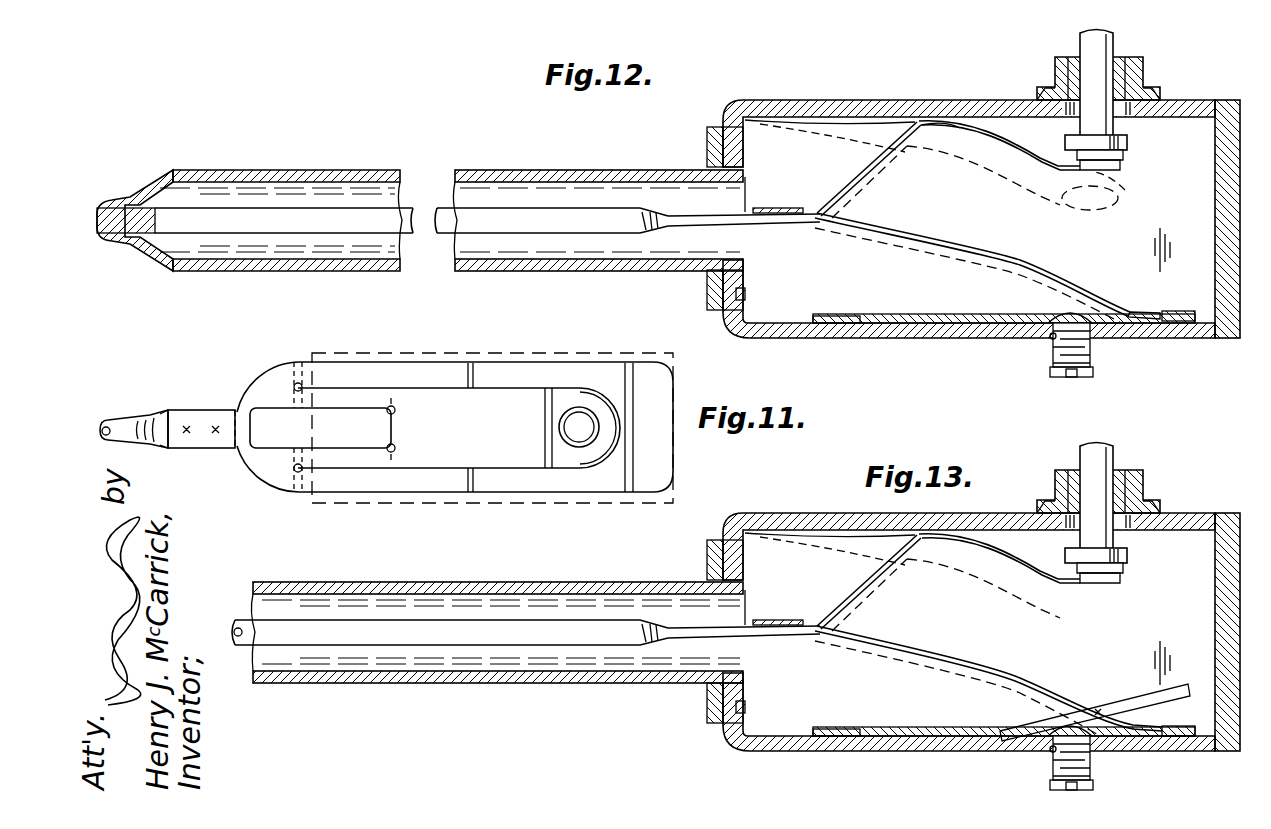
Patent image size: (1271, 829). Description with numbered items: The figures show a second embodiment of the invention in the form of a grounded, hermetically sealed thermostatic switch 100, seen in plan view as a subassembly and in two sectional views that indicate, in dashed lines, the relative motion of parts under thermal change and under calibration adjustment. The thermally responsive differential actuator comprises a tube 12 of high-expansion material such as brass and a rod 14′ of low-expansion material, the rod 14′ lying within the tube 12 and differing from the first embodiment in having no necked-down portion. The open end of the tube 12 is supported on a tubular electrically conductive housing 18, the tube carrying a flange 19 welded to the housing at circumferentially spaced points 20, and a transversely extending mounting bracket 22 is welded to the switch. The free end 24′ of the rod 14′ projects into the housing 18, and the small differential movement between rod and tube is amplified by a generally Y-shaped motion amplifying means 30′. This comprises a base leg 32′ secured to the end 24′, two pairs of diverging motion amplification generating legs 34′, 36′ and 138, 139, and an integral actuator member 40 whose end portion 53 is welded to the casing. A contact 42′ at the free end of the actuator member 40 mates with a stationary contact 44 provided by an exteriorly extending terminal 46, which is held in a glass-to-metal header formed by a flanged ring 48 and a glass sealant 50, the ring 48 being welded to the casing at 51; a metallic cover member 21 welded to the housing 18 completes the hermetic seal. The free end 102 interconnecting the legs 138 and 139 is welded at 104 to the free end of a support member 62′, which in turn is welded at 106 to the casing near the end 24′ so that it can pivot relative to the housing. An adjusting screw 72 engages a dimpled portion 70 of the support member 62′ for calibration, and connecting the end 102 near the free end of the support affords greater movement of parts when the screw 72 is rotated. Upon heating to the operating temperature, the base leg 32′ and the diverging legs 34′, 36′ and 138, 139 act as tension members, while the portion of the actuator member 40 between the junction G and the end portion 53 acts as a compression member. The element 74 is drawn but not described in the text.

In FIG. 12, the tube 12 is at (472, 168).
In FIG. 13, the tube 12 is at (602, 581).
In FIG. 12, the rod 14′ is at (437, 210).
In FIG. 13, the rod 14′ is at (606, 643).
In FIG. 11, the rod 14′ is at (124, 418).
In FIG. 12, the end of rod 24′ is at (703, 226).
In FIG. 13, the end of rod 24′ is at (706, 639).
In FIG. 11, the end of rod 24′ is at (163, 412).
In FIG. 12, the base leg 32′ is at (777, 214).
In FIG. 13, the base leg 32′ is at (787, 626).
In FIG. 11, the base leg 32′ is at (232, 396).
In FIG. 12, the motion amplification generating leg 34′ is at (880, 180).
In FIG. 13, the motion amplification generating leg 34′ is at (880, 592).
In FIG. 11, the motion amplification generating leg 34′ is at (352, 460).
In FIG. 12, the motion amplifying means 30′ is at (864, 167).
In FIG. 13, the motion amplifying means 30′ is at (864, 580).
In FIG. 11, the motion amplification generating leg 36′ is at (342, 396).
In FIG. 12, the support member 62′ is at (962, 313).
In FIG. 13, the support member 62′ is at (962, 726).
In FIG. 11, the support member 62′ is at (366, 382).
In FIG. 11, the motion amplification generating leg 139 is at (518, 378).
In FIG. 12, the contact 42′ is at (1124, 158).
In FIG. 13, the contact 42′ is at (1124, 571).
In FIG. 11, the contact 42′ is at (578, 415).
In FIG. 12, the end portion of actuator member 53 is at (792, 117).
In FIG. 13, the end portion of actuator member 53 is at (797, 530).
In FIG. 11, the end portion of actuator member 53 is at (272, 445).
In FIG. 12, the actuator member 40 is at (1040, 150).
In FIG. 13, the actuator member 40 is at (1010, 562).
In FIG. 11, the actuator member 40 is at (446, 492).
In FIG. 12, the motion amplification generating leg 138 is at (932, 232).
In FIG. 13, the motion amplification generating leg 138 is at (1020, 650).
In FIG. 11, the motion amplification generating leg 138 is at (520, 490).
In FIG. 12, the free end 102 is at (1140, 308).
In FIG. 13, the free end 102 is at (1163, 690).
In FIG. 11, the free end 102 is at (668, 455).
In FIG. 12, the mounting bracket 22 is at (706, 148).
In FIG. 13, the mounting bracket 22 is at (706, 561).
In FIG. 12, the welding points 20 is at (746, 151).
In FIG. 13, the welding points 20 is at (746, 564).
In FIG. 12, the flange 19 is at (748, 295).
In FIG. 13, the flange 19 is at (748, 708).
In FIG. 12, the housing 18 is at (770, 338).
In FIG. 13, the housing 18 is at (772, 751).
In FIG. 12, the cover member 21 is at (1222, 186).
In FIG. 13, the cover member 21 is at (1222, 624).
In FIG. 12, the stationary electrical contact 44 is at (1128, 140).
In FIG. 13, the stationary electrical contact 44 is at (1128, 553).
In FIG. 12, the terminal 46 is at (1114, 38).
In FIG. 13, the terminal 46 is at (1114, 450).
In FIG. 12, the flanged ring 48 is at (1142, 70).
In FIG. 13, the flanged ring 48 is at (1142, 478).
In FIG. 12, the glass sealant 50 is at (1076, 57).
In FIG. 13, the glass sealant 50 is at (1076, 470).
In FIG. 12, the weld 51 is at (1042, 95).
In FIG. 13, the weld 51 is at (1042, 508).
In FIG. 12, the thermostatic switch 100 is at (1206, 96).
In FIG. 13, the thermostatic switch 100 is at (1206, 509).
In FIG. 12, the weld 106 is at (857, 314).
In FIG. 13, the weld 106 is at (865, 727).
In FIG. 12, the dimpled portion 70 is at (1060, 312).
In FIG. 13, the dimpled portion 70 is at (1058, 718).
In FIG. 12, the adjusting screw 72 is at (1093, 356).
In FIG. 13, the adjusting screw 72 is at (1093, 768).
In FIG. 12, the pivot 74 is at (1050, 340).
In FIG. 13, the pivot 74 is at (1050, 753).
In FIG. 12, the weld 104 is at (1182, 310).
In FIG. 13, the weld 104 is at (1178, 740).
In FIG. 12, the junction G is at (940, 137).